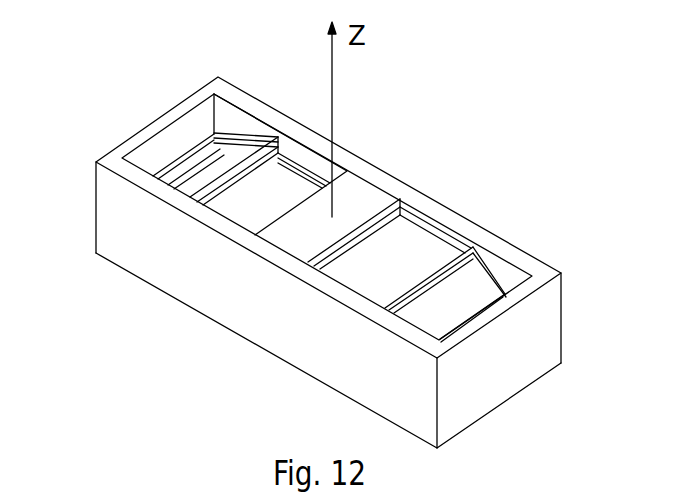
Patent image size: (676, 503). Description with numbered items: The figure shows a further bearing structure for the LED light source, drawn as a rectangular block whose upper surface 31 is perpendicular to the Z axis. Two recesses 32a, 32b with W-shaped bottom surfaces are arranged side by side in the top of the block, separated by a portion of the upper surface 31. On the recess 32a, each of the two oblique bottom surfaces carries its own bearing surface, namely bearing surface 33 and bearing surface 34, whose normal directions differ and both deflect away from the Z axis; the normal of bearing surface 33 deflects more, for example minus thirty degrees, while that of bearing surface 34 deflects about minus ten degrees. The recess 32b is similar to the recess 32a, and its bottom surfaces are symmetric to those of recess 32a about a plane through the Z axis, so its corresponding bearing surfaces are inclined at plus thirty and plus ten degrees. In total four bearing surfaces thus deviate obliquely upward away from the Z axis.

The upper surface 31 is at (373, 187).
The recess 32a is at (182, 75).
The recess 32b is at (480, 198).
The bearing surface 33 is at (200, 166).
The bearing surface 34 is at (253, 217).